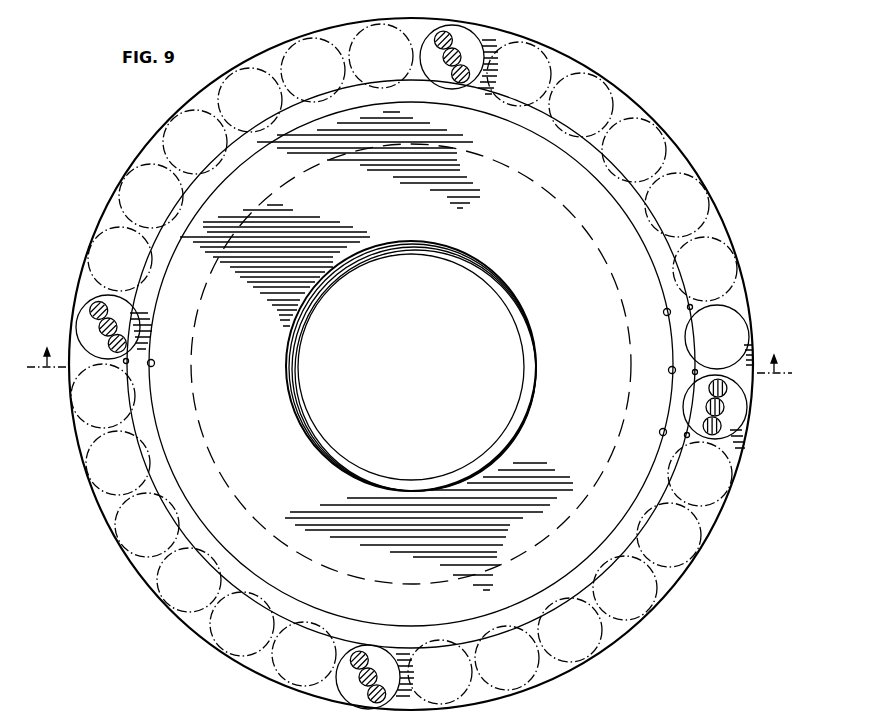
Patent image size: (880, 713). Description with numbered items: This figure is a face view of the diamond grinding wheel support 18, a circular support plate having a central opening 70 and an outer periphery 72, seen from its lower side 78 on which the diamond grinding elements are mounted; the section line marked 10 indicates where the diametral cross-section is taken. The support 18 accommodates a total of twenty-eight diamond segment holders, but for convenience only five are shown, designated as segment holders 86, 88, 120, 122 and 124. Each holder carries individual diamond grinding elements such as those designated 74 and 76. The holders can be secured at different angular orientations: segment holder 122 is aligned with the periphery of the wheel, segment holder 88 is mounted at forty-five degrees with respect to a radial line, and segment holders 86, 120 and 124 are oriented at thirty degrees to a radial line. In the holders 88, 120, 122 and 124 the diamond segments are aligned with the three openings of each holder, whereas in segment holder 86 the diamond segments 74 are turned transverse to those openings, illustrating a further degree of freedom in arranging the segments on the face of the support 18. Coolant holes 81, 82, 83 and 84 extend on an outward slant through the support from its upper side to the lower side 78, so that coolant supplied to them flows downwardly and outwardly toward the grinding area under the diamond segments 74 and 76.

The diamond grinding wheel support 18 is at (688, 156).
The outer periphery 72 is at (727, 229).
The diamond grinding element 74 is at (714, 323).
The lower side of the support 78 is at (581, 410).
The central opening 70 is at (447, 281).
The segment holder 120 is at (478, 36).
The segment holder 122 is at (742, 432).
The segment holder 124 is at (367, 645).
The segment holder 86 is at (740, 316).
The segment holder 88 is at (82, 309).
The diamond grinding element 76 is at (128, 342).
The coolant hole 84 is at (128, 360).
The coolant hole 83 is at (153, 366).
The coolant hole 82 is at (668, 368).
The coolant hole 81 is at (684, 433).
The section line 10- 10 is at (409, 353).